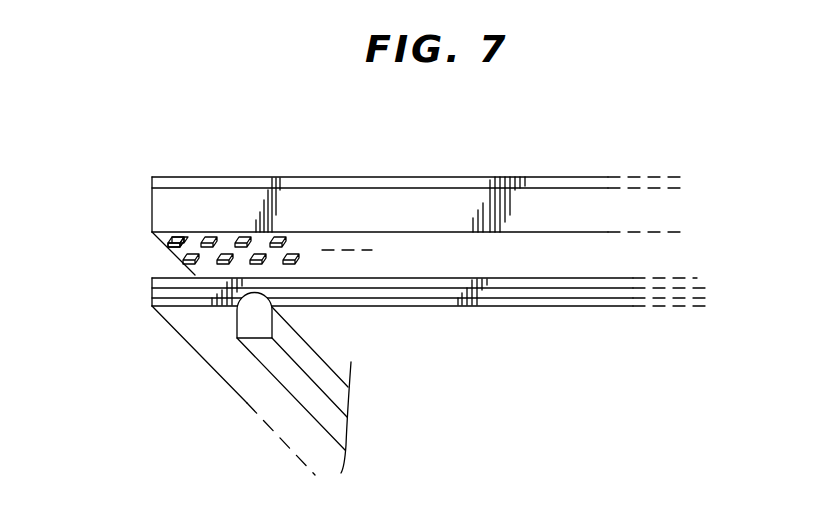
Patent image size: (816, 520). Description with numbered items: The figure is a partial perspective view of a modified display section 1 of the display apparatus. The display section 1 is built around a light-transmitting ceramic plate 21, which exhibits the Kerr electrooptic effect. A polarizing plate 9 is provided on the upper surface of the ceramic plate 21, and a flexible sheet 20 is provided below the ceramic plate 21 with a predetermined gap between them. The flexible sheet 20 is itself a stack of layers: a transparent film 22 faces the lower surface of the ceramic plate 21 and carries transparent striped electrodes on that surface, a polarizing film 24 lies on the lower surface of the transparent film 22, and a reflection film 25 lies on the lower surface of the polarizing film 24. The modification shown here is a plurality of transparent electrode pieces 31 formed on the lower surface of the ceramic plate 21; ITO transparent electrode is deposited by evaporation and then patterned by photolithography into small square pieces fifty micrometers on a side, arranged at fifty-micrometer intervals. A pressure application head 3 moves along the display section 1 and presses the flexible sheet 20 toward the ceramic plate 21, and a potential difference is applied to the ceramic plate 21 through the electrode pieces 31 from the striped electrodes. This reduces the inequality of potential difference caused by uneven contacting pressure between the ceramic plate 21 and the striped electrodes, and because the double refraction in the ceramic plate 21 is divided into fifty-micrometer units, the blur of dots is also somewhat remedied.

The display section 1 is at (102, 188).
The pressure application head 3 is at (305, 352).
The polarizing plate 9 is at (512, 182).
The flexible sheet 20 is at (665, 365).
The light-transmitting ceramic plate 21 is at (367, 207).
The transparent film 22 is at (487, 282).
The polarizing film 24 is at (543, 297).
The reflection film 25 is at (605, 307).
The transparent electrode pieces 31 is at (243, 238).